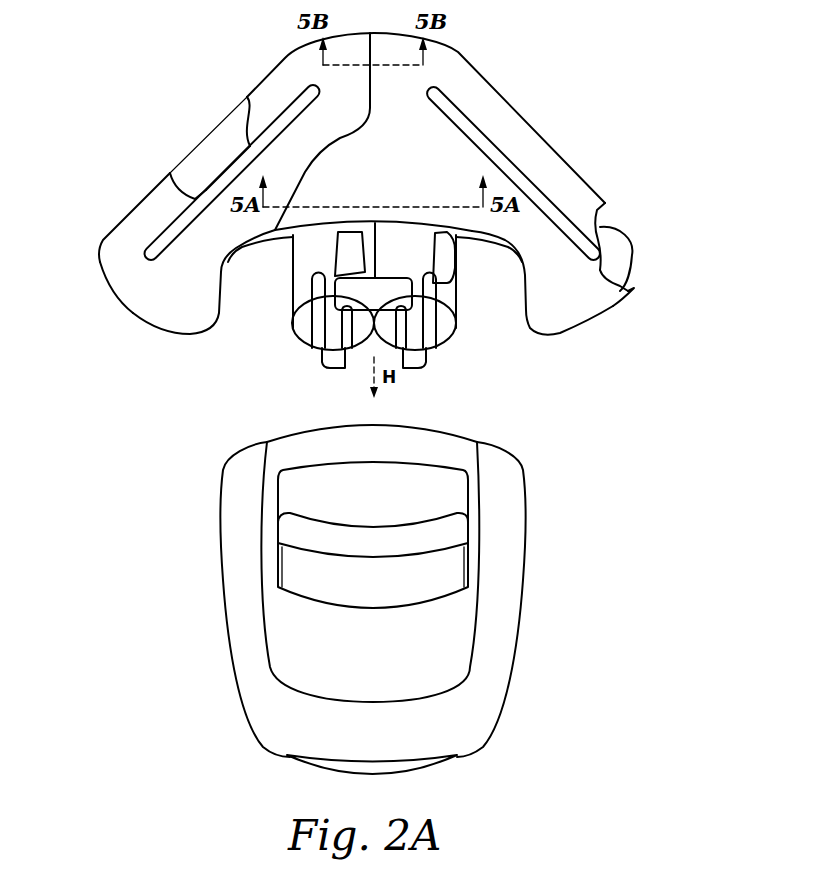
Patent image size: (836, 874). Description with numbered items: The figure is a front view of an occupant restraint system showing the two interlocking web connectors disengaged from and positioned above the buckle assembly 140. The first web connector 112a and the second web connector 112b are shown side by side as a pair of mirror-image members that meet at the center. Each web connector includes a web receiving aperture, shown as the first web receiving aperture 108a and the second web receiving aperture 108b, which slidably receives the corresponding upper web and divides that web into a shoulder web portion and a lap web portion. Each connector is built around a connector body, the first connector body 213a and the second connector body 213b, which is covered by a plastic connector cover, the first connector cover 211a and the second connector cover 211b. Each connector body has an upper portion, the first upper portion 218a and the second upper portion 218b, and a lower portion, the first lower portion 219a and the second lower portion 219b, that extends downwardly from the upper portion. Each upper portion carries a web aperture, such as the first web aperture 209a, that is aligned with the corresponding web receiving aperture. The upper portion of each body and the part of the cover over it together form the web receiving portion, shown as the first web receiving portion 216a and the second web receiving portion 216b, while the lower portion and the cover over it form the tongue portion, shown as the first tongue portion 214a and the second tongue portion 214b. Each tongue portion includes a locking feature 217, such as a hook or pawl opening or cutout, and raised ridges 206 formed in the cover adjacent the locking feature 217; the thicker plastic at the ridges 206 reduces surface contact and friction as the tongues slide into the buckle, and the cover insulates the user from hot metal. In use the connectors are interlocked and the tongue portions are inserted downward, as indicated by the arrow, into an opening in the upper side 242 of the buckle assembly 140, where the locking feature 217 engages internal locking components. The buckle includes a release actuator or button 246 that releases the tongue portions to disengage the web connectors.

The first web receiving aperture 108a is at (110, 245).
The second web receiving aperture 108b is at (623, 252).
The first web connector 112a is at (110, 280).
The second web connector 112b is at (633, 290).
The buckle assembly 140 is at (510, 477).
The raised ridges 206 is at (323, 369).
The first web aperture 209a is at (217, 183).
The first connector cover 211a is at (182, 318).
The second connector cover 211b is at (613, 303).
The first connector body 213a is at (216, 143).
The second connector body 213b is at (610, 230).
The first tongue portion 214a is at (298, 332).
The second tongue portion 214b is at (448, 330).
The first web receiving portion 216a is at (300, 62).
The second web receiving portion 216b is at (457, 67).
The locking feature 217 is at (303, 330).
The first upper portion 218a is at (237, 118).
The second upper portion 218b is at (633, 258).
The first lower portion 219a is at (356, 255).
The second lower portion 219b is at (440, 247).
The upper side of the buckle 242 is at (286, 422).
The release actuator or button 246 is at (450, 572).